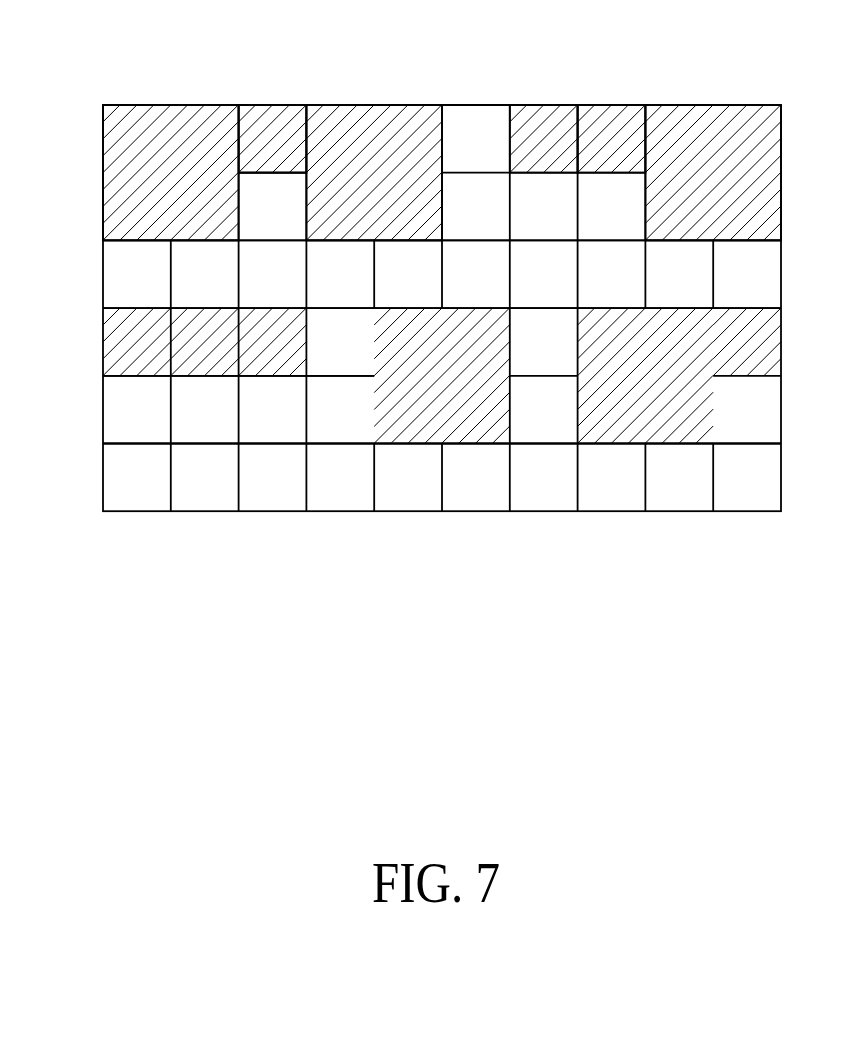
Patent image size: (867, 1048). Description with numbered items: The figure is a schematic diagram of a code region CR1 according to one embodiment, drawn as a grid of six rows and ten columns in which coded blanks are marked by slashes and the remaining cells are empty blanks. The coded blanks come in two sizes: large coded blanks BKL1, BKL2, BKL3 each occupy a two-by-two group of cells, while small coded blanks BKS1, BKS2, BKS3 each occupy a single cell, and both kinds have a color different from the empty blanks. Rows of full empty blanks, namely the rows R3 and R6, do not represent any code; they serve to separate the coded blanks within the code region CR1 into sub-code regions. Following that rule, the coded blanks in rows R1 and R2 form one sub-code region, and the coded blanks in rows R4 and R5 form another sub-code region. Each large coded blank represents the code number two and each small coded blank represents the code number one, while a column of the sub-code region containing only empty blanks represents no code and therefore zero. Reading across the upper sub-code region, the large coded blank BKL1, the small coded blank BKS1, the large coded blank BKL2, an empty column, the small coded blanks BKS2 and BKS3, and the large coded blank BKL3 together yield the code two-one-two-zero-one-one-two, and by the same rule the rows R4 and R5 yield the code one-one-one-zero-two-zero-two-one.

The large coded blank BKL1 is at (175, 118).
The small coded blank BKS1 is at (277, 118).
The large coded blank BKL2 is at (398, 118).
The small coded blank BKS2 is at (537, 118).
The small coded blank BKS3 is at (625, 118).
The large coded blank BKL3 is at (727, 118).
The code region CR1 is at (631, 583).
The row R1 is at (410, 131).
The row R2 is at (173, 199).
The row R3 is at (410, 266).
The row R4 is at (410, 334).
The row R5 is at (207, 401).
The row R6 is at (410, 470).